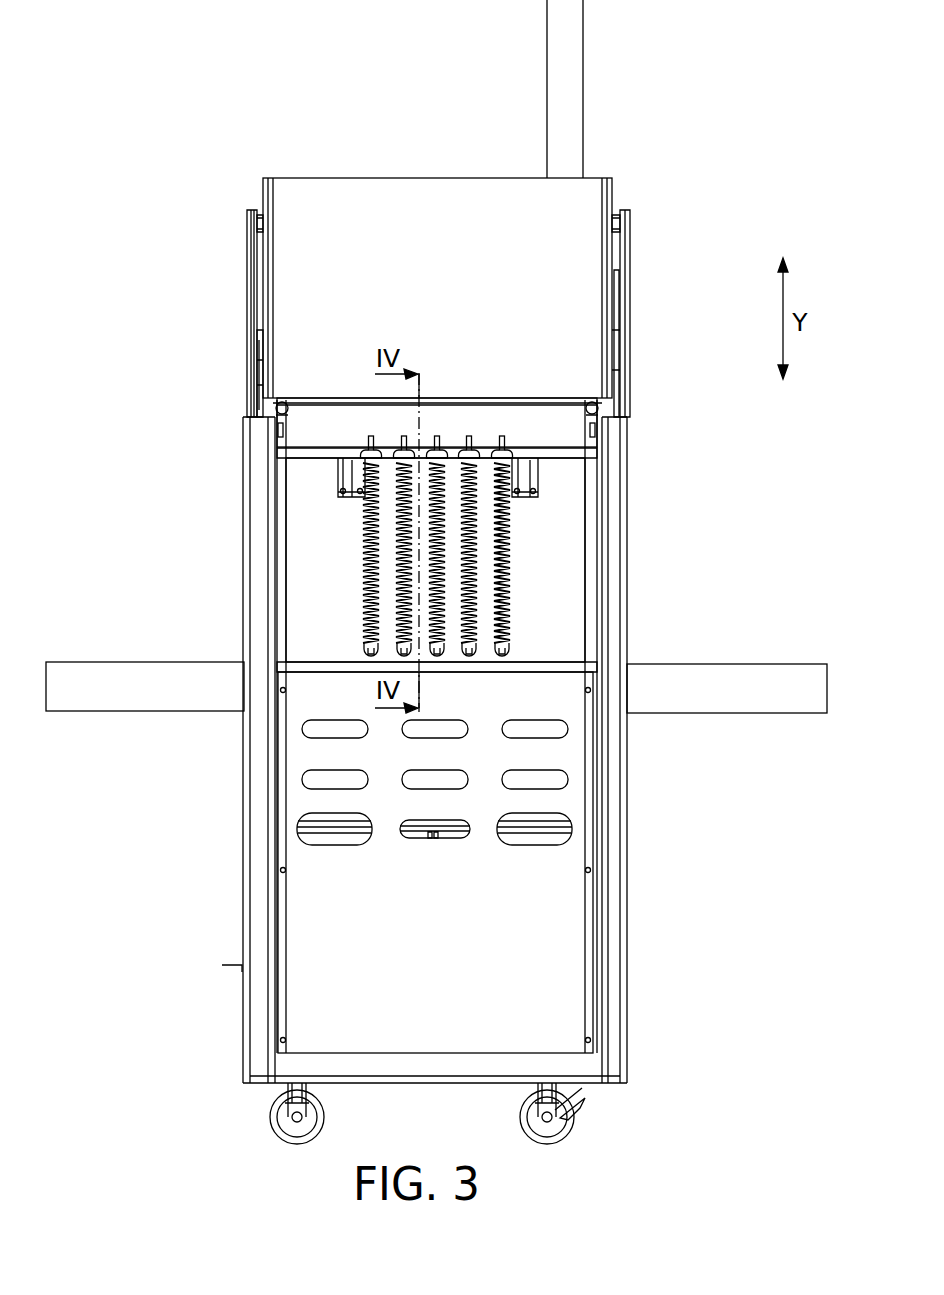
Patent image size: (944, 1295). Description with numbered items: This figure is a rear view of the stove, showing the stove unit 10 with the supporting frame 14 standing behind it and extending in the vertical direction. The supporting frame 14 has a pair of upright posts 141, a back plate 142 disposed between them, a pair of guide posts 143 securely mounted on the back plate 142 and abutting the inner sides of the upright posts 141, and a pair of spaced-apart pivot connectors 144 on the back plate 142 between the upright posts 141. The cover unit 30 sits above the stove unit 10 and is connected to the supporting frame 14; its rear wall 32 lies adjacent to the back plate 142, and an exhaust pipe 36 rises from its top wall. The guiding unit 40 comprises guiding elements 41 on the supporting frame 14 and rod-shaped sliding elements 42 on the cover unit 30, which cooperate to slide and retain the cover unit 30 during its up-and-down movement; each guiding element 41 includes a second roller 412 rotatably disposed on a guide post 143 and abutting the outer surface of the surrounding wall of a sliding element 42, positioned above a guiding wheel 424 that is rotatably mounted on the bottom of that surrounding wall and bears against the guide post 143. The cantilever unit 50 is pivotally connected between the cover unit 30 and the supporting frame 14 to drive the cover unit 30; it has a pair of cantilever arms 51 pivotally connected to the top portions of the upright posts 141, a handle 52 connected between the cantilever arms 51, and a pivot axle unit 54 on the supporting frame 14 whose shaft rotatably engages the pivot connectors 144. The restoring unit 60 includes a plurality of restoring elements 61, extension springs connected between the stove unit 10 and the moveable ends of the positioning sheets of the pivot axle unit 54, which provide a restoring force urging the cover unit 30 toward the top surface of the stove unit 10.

The stove unit 10 is at (243, 590).
The supporting frame 14 is at (245, 485).
The upright posts 141 is at (628, 548).
The back plate 142 is at (560, 585).
The guide posts 143 is at (282, 548).
The pivot connectors 144 is at (530, 485).
The cover unit 30 is at (325, 170).
The rear wall 32 is at (388, 197).
The exhaust pipe 36 is at (572, 48).
The guiding unit 40 is at (268, 362).
The guiding elements 41 is at (278, 400).
The sliding elements 42 is at (268, 300).
The second roller 412 is at (283, 402).
The guiding wheels 424 is at (285, 430).
The cantilever unit 50 is at (628, 248).
The cantilever arms 51 is at (628, 290).
The handle 52 is at (615, 205).
The pivot axle unit 54 is at (562, 447).
The restoring unit 60 is at (352, 547).
The restoring elements 61 is at (365, 605).